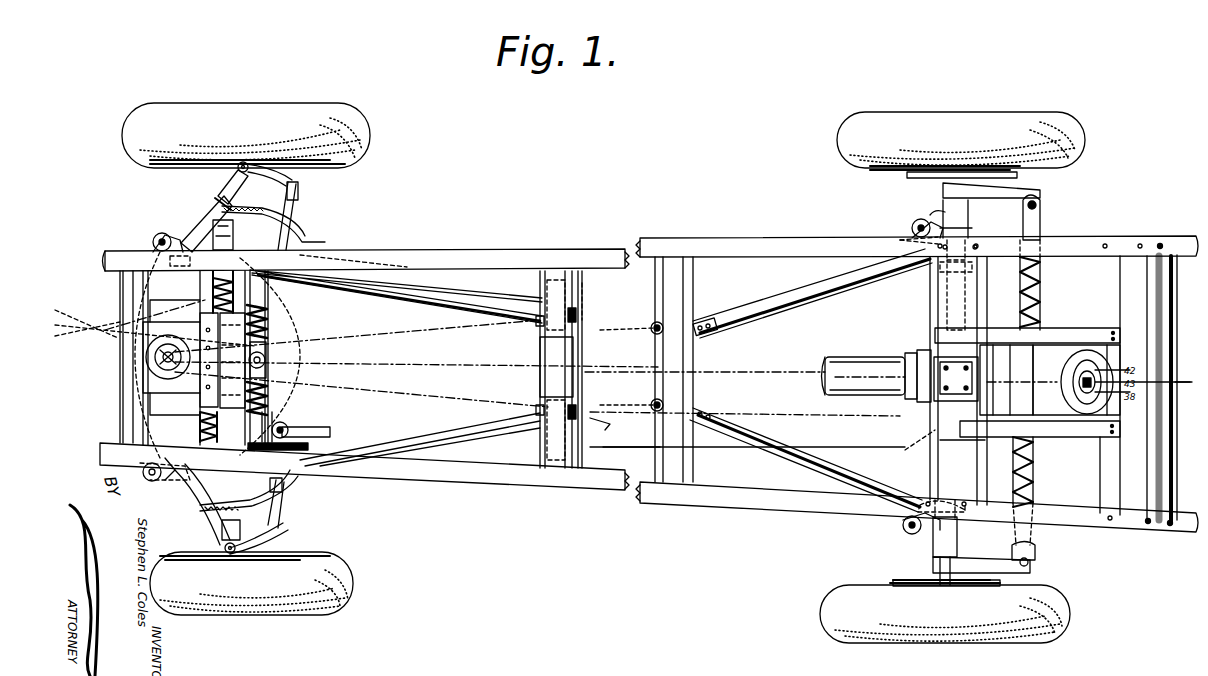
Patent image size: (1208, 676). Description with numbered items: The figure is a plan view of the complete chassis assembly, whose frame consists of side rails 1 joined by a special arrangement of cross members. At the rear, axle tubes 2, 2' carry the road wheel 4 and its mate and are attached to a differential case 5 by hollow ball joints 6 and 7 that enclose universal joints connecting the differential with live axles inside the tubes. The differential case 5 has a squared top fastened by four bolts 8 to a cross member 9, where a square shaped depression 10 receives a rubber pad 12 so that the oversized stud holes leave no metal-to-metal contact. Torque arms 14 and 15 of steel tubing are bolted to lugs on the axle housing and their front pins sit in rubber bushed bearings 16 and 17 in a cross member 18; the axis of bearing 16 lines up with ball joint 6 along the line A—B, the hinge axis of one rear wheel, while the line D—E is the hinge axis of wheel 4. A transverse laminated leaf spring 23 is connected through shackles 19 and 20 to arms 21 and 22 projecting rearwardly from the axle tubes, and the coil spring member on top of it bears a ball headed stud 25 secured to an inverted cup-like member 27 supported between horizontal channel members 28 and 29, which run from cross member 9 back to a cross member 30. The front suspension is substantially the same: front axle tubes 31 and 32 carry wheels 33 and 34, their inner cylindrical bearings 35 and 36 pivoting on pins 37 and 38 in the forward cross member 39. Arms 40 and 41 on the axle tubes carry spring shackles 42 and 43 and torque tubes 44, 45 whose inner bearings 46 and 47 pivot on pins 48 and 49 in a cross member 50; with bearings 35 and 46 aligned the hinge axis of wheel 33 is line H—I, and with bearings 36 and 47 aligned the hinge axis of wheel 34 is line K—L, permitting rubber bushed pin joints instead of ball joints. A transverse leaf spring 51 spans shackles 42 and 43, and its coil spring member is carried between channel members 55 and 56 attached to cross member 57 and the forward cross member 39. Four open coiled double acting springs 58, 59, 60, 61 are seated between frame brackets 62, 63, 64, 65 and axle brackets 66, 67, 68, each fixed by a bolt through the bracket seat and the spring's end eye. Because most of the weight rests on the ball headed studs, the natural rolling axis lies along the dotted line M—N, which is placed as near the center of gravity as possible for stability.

The side rail 1 is at (712, 246).
The rear axle tube 2 is at (939, 573).
The rear axle tube 2' is at (953, 178).
The road wheel 4 is at (1085, 155).
The differential case 5 is at (900, 622).
The hollow ball joint 6 is at (925, 420).
The hollow ball joint 7 is at (930, 330).
The bolt 8 is at (956, 379).
The cross member 9 is at (932, 463).
The square shaped depression 10 is at (910, 355).
The pad 12 is at (918, 402).
The torque arm 14 is at (770, 435).
The torque arm 15 is at (805, 320).
The rubber bushed bearing 16 is at (645, 398).
The rubber bushed bearing 17 is at (645, 335).
The cross member 18 is at (631, 447).
The shackle 19 is at (1040, 558).
The shackle 20 is at (1045, 205).
The arm 21 is at (834, 404).
The arm 22 is at (1000, 190).
The transverse laminated leaf spring 23 is at (1030, 484).
The ball headed stud 25 is at (1050, 378).
The inverted cup-like member 27 is at (985, 560).
The horizontal channel member 28 is at (1052, 332).
The horizontal channel member 29 is at (1073, 434).
The cross member 30 is at (1100, 463).
The front axle tube 31 is at (178, 493).
The front axle tube 32 is at (156, 238).
The wheel 33 is at (251, 583).
The wheel 34 is at (226, 118).
The cylindrical bearing 35 is at (150, 368).
The cylindrical bearing 36 is at (150, 342).
The pin 37 is at (163, 357).
The pin 38 is at (158, 350).
The forward cross member 39 is at (123, 408).
The arm 40 is at (262, 512).
The arm 41 is at (246, 218).
The spring shackle 42 is at (240, 470).
The spring shackle 43 is at (288, 232).
The torque tube 44 is at (404, 445).
The torque tube 45 is at (403, 285).
The cylindrical bearing 46 is at (536, 410).
The cylindrical bearing 47 is at (536, 325).
The pin 48 is at (578, 318).
The pin 49 is at (575, 408).
The cross member 50 is at (562, 369).
The transverse leaf spring 51 is at (230, 432).
The channel member 55 is at (155, 328).
The channel member 56 is at (203, 317).
The cross member 57 is at (265, 352).
The open coiled double acting spring 58 is at (900, 535).
The open coiled double acting spring 59 is at (910, 229).
The open coiled double acting spring 60 is at (150, 480).
The open coiled double acting spring 61 is at (165, 232).
The bracket 62 is at (902, 524).
The bracket 63 is at (916, 220).
The bracket 64 is at (142, 471).
The bracket 65 is at (142, 243).
The bracket 66 is at (945, 528).
The bracket 67 is at (170, 262).
The bracket 68 is at (178, 462).
The hinge axis line A—B A is at (600, 415).
The hinge axis line A— B is at (916, 443).
The hinge axis line D—E D is at (639, 331).
The hinge axis line D— E is at (960, 332).
The hinge axis line H—I H is at (81, 333).
The hinge axis line K—L K is at (80, 319).
The hinge axis line K— L is at (590, 312).
The rolling axis line M—N M is at (147, 330).
The rolling axis line M— N is at (1183, 381).